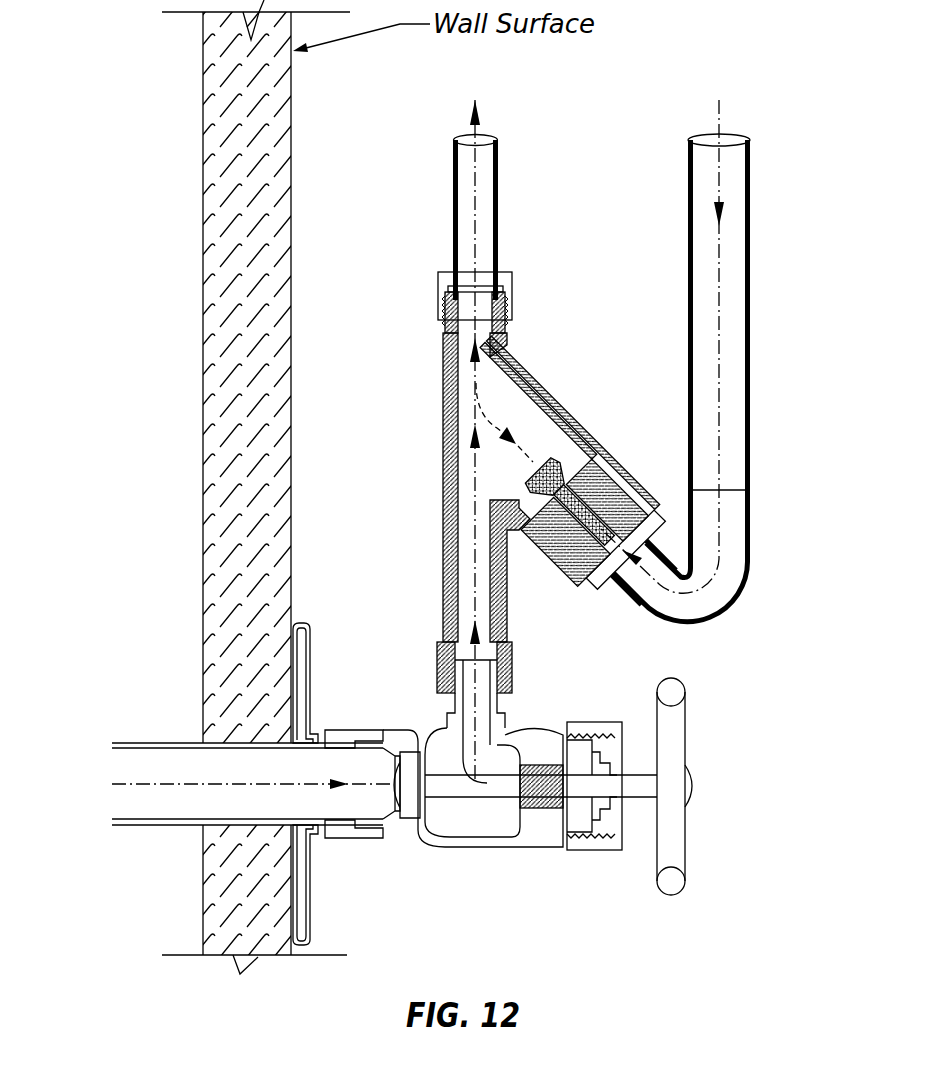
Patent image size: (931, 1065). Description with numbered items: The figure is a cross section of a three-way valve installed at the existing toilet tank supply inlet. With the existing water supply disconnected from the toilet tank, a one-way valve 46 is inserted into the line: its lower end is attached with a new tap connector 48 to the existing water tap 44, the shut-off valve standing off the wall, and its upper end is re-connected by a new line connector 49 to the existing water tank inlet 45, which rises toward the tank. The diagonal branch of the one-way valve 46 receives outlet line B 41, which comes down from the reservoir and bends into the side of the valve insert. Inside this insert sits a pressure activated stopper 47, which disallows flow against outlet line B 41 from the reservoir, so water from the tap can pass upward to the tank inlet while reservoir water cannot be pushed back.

The outlet line B 41 is at (756, 339).
The existing water tap 44 is at (500, 862).
The existing water tank inlet 45 is at (505, 187).
The one-way valve 46 is at (558, 384).
The pressure activated stopper 47 is at (522, 473).
The new tap connector 48 is at (521, 662).
The new line connector 49 is at (519, 295).